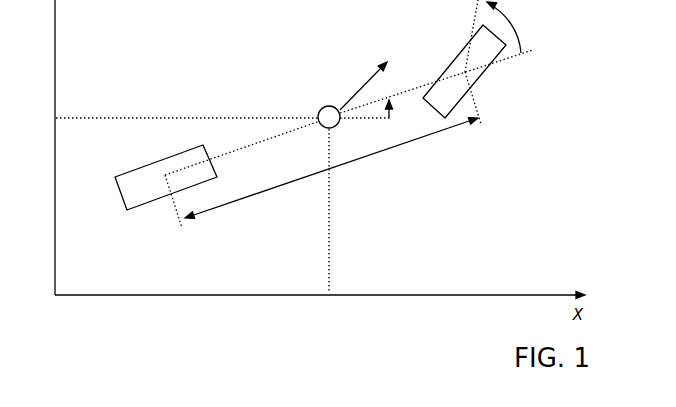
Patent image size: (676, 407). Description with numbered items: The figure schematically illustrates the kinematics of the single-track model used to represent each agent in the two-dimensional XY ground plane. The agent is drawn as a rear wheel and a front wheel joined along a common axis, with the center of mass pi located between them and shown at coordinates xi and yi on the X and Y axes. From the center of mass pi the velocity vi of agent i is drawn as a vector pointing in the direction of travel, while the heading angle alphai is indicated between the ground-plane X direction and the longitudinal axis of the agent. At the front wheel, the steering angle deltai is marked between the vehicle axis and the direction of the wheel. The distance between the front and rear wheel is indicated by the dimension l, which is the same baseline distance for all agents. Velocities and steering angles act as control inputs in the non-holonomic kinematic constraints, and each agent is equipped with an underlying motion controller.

The center of mass pi is at (322, 129).
The velocity vi is at (363, 74).
The heading angle alphai is at (399, 110).
The steering angle deltai is at (505, 27).
The distance between front and rear wheel l is at (331, 168).
The x coordinate xi is at (328, 313).
The y coordinate yi is at (40, 119).